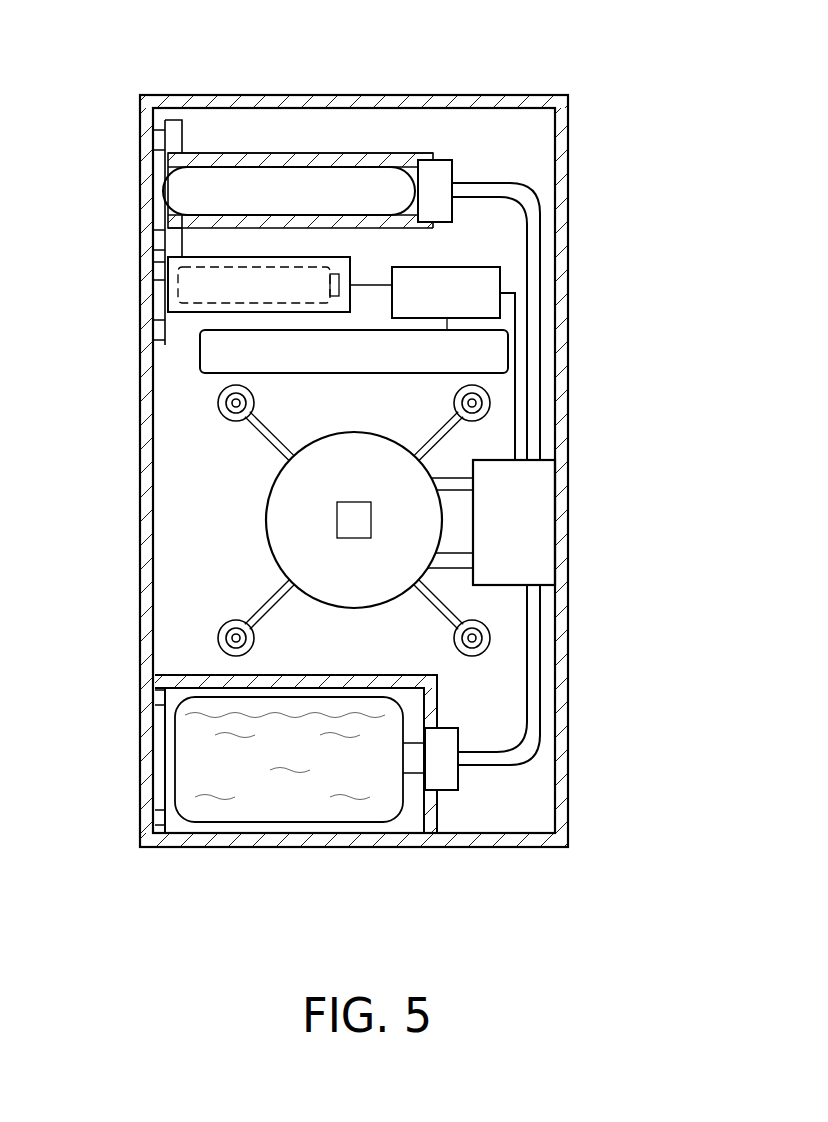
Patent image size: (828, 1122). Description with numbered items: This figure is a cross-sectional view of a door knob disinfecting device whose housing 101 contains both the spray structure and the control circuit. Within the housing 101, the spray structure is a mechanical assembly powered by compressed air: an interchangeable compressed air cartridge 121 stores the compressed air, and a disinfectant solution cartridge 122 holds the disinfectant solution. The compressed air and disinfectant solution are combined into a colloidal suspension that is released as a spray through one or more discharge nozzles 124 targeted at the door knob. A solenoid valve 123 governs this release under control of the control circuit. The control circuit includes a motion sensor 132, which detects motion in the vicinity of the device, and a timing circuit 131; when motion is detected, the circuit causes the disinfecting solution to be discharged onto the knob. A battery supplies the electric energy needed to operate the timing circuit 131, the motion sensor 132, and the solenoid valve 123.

The housing 101 is at (237, 282).
The compressed air cartridge 121 is at (322, 187).
The disinfectant solution cartridge 122 is at (298, 807).
The solenoid valve 123 is at (527, 525).
The discharge nozzles 124 is at (233, 636).
The timing circuit 131 is at (476, 283).
The motion sensor 132 is at (487, 355).